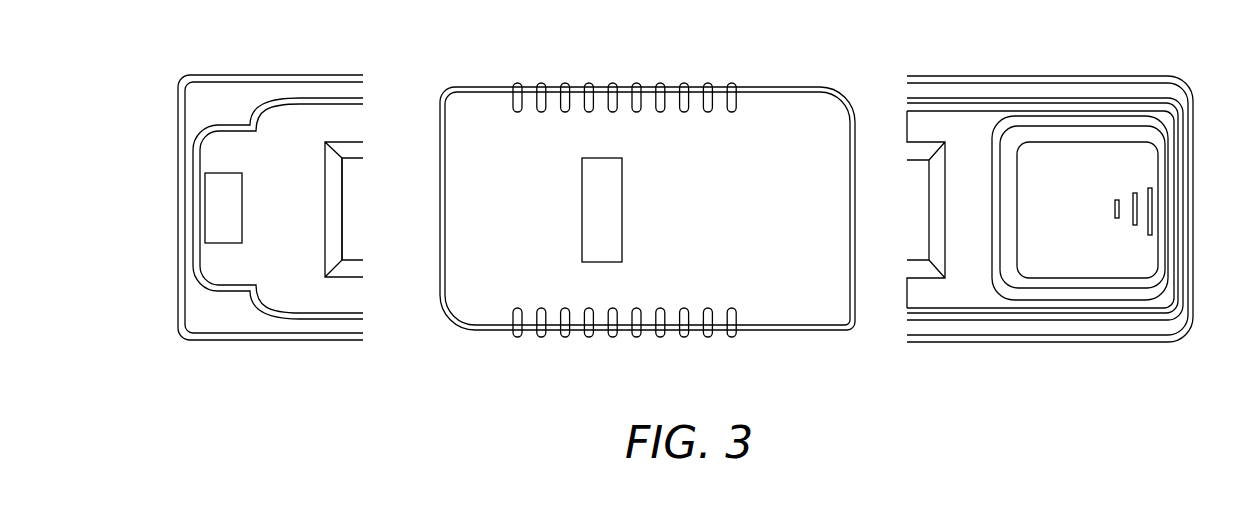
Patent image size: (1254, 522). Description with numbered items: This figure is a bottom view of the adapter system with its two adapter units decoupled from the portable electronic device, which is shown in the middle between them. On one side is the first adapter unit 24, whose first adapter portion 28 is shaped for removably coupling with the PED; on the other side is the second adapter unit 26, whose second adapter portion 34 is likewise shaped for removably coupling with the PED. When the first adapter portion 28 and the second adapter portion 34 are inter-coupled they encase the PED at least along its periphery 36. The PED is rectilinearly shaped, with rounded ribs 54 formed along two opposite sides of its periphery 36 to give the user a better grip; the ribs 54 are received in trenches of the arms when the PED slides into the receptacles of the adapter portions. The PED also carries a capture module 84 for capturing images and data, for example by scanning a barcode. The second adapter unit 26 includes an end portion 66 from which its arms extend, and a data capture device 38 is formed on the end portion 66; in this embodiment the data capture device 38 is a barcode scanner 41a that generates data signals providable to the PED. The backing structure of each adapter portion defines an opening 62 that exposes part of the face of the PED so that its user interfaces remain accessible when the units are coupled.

The first adapter unit 24 is at (1068, 359).
The second adapter unit 26 is at (257, 358).
The first adapter portion 28 is at (947, 328).
The second adapter portion 34 is at (336, 320).
The periphery 36 is at (480, 351).
The data capture device 38 is at (772, 282).
The barcode scanner 41a is at (203, 211).
The ribs 54 is at (612, 338).
The opening 62 is at (340, 212).
The end portion 66 is at (218, 337).
The capture module 84 is at (613, 239).